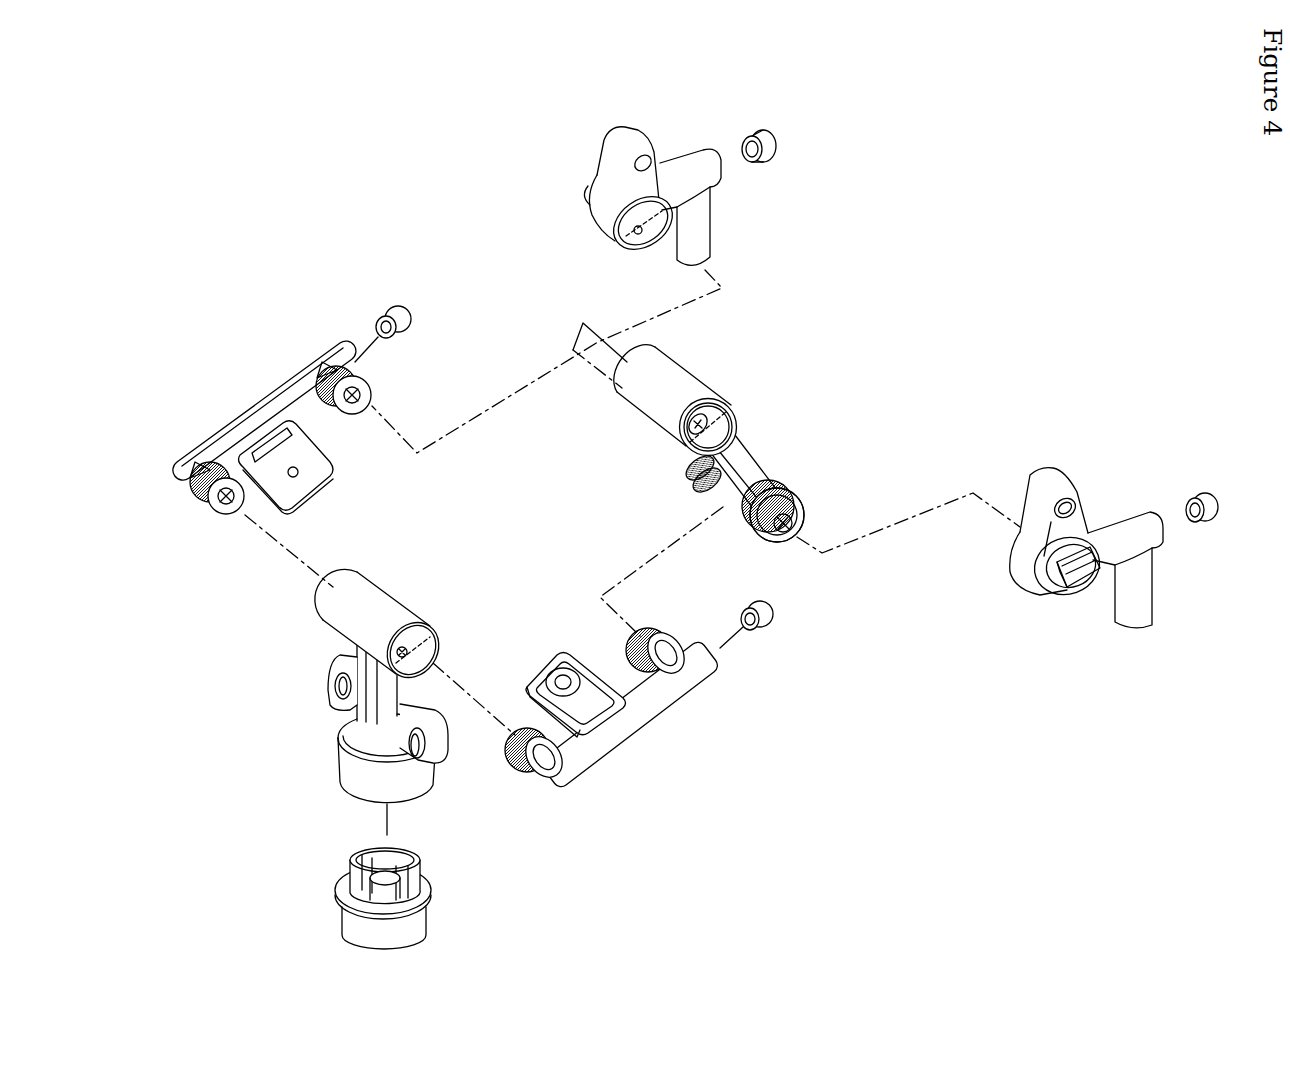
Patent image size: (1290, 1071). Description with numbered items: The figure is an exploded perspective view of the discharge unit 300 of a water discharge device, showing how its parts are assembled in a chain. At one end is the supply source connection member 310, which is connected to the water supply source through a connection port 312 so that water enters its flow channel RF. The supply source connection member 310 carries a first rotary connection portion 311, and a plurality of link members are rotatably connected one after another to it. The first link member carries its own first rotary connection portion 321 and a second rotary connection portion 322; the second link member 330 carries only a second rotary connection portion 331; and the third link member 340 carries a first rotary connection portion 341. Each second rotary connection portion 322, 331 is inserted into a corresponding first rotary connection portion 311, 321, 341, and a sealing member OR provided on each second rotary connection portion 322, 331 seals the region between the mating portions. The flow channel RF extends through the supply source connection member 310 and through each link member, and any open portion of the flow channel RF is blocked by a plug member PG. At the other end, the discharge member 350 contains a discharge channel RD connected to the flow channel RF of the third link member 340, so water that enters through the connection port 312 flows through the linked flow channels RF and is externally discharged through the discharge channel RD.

The discharge unit 300 is at (1066, 157).
The supply source connection member 310 is at (723, 245).
The first rotary connection portion 311 is at (643, 257).
The connection port 312 is at (708, 212).
The first rotary connection portion 321 is at (688, 430).
The second rotary connection portion 322 is at (693, 464).
The second link member 330 is at (539, 660).
The second rotary connection portion 331 is at (372, 396).
The third link member 340 is at (327, 694).
The first rotary connection portion 341 is at (358, 610).
The discharge member 350 is at (433, 914).
The plug member PG is at (778, 148).
The sealing member OR is at (368, 383).
The flow channel RF is at (615, 228).
The discharge channel RD is at (420, 868).